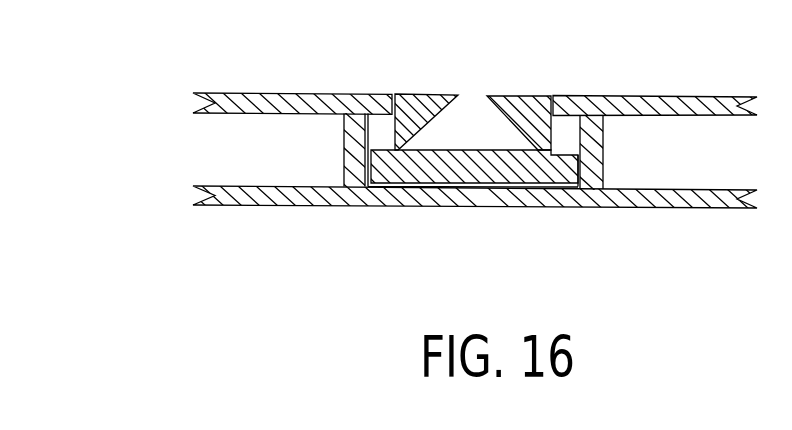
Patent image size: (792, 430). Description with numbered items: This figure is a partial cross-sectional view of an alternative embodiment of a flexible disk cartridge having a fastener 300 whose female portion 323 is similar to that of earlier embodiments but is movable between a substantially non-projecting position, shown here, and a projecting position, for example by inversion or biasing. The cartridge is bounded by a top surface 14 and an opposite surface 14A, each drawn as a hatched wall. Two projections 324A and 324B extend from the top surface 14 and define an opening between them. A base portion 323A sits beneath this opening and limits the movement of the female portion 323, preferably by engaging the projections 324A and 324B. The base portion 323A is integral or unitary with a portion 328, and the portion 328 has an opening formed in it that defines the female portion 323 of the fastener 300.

The top surface 14 is at (678, 97).
The surface 14A is at (685, 208).
The fastener 300 is at (452, 80).
The female portion 323 is at (475, 143).
The base portion 323A is at (462, 178).
The projection 324A is at (365, 128).
The projection 324B is at (565, 117).
The portion 328 is at (410, 98).